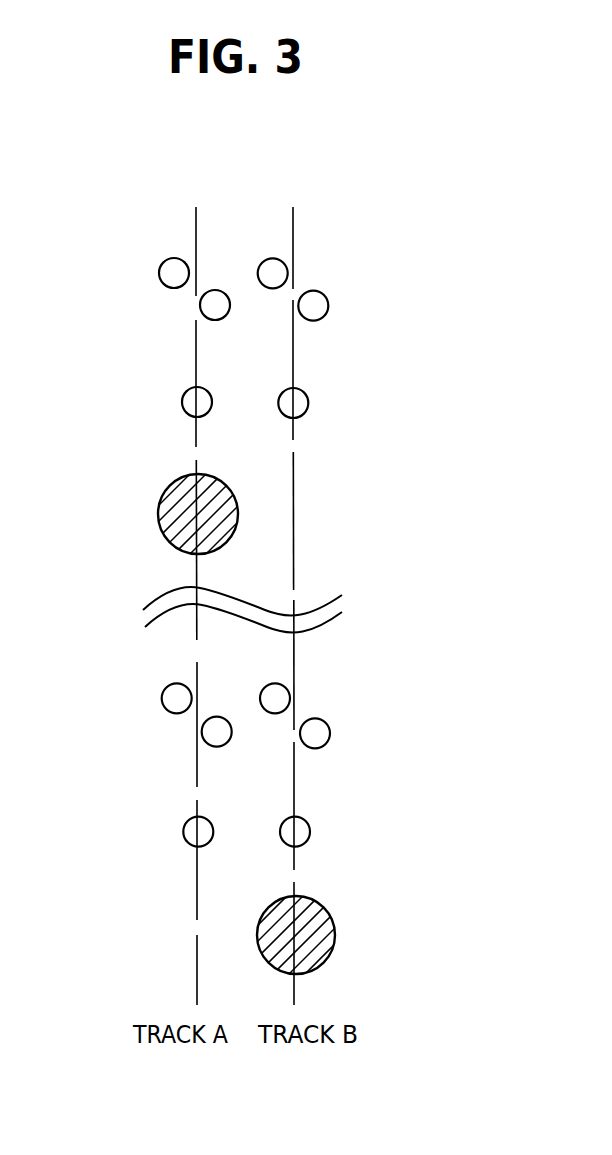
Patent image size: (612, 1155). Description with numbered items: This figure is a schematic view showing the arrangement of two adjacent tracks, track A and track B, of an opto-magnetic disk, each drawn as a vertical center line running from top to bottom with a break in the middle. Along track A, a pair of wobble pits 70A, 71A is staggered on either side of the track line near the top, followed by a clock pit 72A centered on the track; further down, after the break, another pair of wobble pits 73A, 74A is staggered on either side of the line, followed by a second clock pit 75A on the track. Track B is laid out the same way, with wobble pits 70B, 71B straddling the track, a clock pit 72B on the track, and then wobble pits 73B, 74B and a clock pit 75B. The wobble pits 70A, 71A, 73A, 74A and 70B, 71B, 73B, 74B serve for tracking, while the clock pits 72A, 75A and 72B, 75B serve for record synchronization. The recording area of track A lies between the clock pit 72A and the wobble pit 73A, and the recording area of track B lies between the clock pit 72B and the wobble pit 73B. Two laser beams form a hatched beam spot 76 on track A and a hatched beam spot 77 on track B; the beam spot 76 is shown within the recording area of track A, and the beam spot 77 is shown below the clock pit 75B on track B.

The wobble pit 70A is at (159, 274).
The wobble pit 71A is at (210, 313).
The clock pit 72A is at (187, 402).
The wobble pit 70B is at (281, 266).
The wobble pit 71B is at (321, 307).
The clock pit 72B is at (307, 408).
The beam spot 76 is at (173, 505).
The wobble pit 73A is at (161, 697).
The wobble pit 74A is at (203, 738).
The clock pit 75A is at (186, 830).
The wobble pit 73B is at (280, 693).
The wobble pit 74B is at (325, 732).
The clock pit 75B is at (308, 833).
The beam spot 77 is at (323, 943).